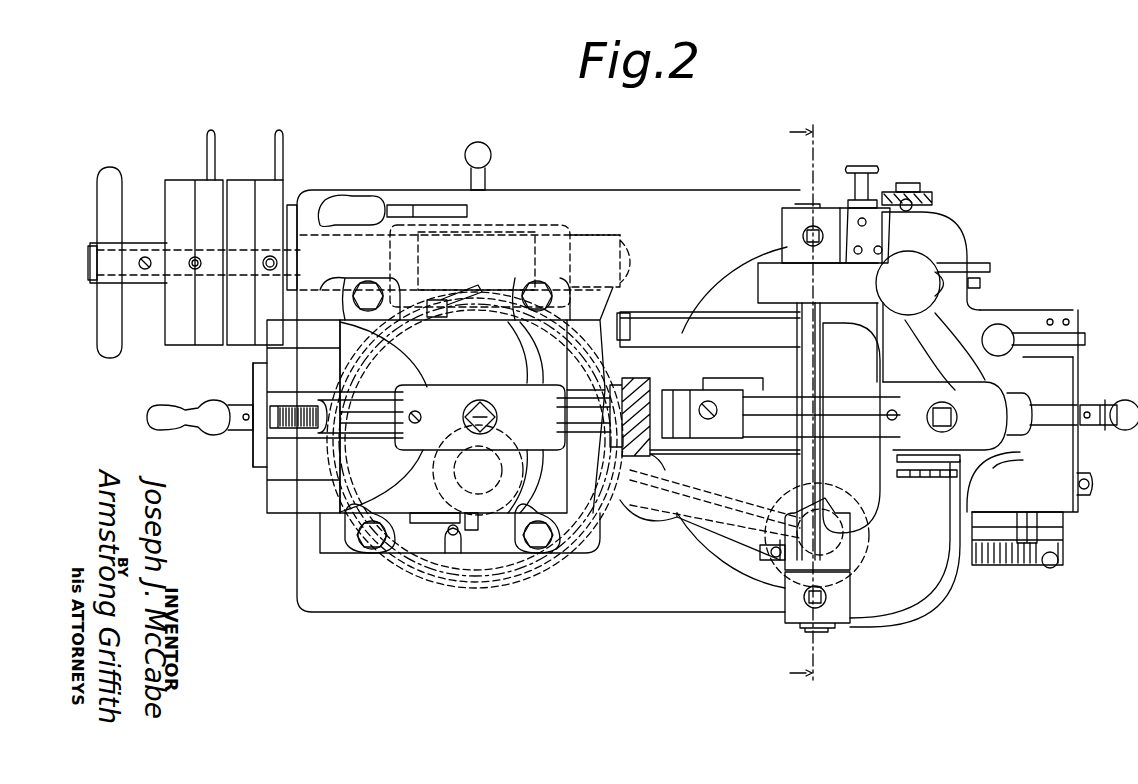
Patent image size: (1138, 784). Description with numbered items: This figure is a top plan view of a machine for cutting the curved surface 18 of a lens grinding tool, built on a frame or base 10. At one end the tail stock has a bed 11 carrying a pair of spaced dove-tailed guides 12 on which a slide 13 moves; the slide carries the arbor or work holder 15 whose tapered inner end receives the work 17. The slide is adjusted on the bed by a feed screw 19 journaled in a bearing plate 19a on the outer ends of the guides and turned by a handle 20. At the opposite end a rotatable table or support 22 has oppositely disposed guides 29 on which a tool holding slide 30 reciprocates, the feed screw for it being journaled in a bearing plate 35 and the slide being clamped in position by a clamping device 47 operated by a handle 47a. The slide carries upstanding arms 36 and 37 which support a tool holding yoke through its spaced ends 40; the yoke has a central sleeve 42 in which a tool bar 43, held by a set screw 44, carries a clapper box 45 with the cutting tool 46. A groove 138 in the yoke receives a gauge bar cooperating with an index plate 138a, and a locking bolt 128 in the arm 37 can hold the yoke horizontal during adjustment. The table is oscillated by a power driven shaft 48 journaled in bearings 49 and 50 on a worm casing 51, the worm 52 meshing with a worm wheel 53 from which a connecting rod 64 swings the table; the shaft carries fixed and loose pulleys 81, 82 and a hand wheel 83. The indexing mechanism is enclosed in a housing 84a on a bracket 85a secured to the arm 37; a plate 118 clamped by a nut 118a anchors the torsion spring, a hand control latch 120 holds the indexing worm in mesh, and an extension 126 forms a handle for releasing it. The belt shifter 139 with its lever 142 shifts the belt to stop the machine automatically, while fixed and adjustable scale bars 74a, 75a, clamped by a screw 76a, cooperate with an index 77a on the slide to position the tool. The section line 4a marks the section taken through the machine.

The frame or base 10 is at (680, 600).
The bed or table 11 is at (288, 498).
The dove-tailed guides 12 is at (240, 360).
The slide 13 is at (470, 358).
The arbor or work holder 15 is at (578, 395).
The work or lens grinding tool 17 is at (650, 355).
The curved surface 18 is at (660, 472).
The feed screw 19 is at (280, 430).
The bearing plate 19a is at (256, 378).
The handle 20 is at (180, 420).
The table or support 22 is at (710, 543).
The guides 29 is at (690, 330).
The tool holding slide 30 is at (1047, 495).
The bearing plate 35 is at (1090, 420).
The upstanding arm 36 is at (842, 600).
The upstanding arm 37 is at (790, 208).
The spaced ends 40 is at (855, 548).
The sleeve or bearing 42 is at (980, 395).
The tool bar or arbor 43 is at (832, 400).
The set screw 44 is at (937, 400).
The clapper box 45 is at (712, 408).
The tool 46 is at (655, 400).
The clamping device 47 is at (1003, 325).
The handle 47a is at (1085, 338).
The power driven shaft 48 is at (170, 248).
The bearing 49 is at (305, 235).
The bearing 50 is at (600, 242).
The worm casing 51 is at (555, 230).
The worm 52 is at (496, 235).
The worm wheel 53 is at (490, 300).
The connecting rod 64 is at (650, 530).
The fixed scale bar 74a is at (1037, 568).
The adjustable scale bar 75a is at (1000, 560).
The screw 76a is at (1060, 560).
The index 77a is at (1028, 515).
The fixed pulley 81 is at (255, 183).
The loose pulley 82 is at (176, 183).
The hand wheel 83 is at (115, 175).
The housing 84a is at (775, 275).
The bracket 85a is at (870, 237).
The plate 118 is at (935, 200).
The nut 118a is at (918, 185).
The hand control latch or lever 120 is at (978, 266).
The extension 126 is at (910, 283).
The locking bolt 128 is at (875, 185).
The groove or slot 138 is at (948, 470).
The index plate 138a is at (928, 463).
The belt shifter 139 is at (283, 134).
The lever 142 is at (396, 205).
The section line 4a is at (805, 403).